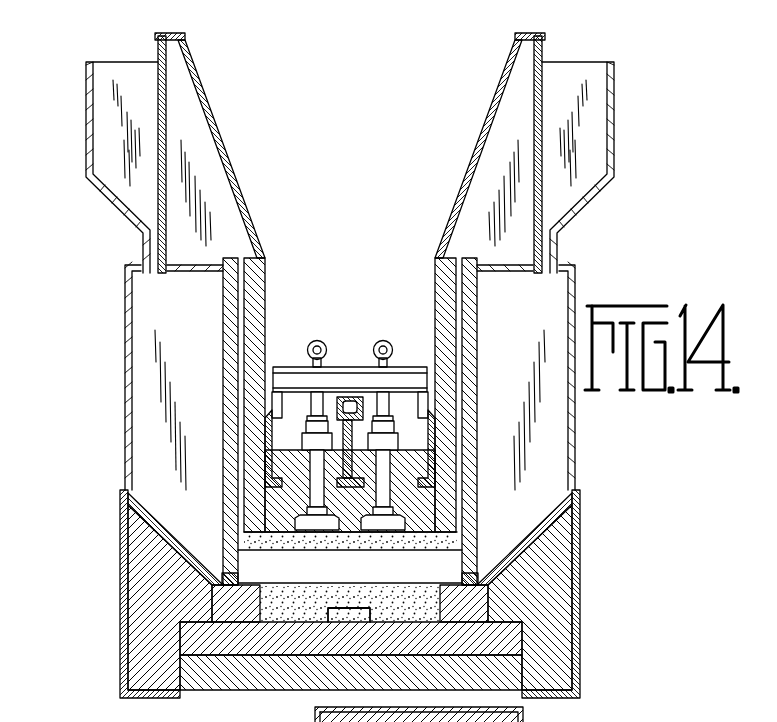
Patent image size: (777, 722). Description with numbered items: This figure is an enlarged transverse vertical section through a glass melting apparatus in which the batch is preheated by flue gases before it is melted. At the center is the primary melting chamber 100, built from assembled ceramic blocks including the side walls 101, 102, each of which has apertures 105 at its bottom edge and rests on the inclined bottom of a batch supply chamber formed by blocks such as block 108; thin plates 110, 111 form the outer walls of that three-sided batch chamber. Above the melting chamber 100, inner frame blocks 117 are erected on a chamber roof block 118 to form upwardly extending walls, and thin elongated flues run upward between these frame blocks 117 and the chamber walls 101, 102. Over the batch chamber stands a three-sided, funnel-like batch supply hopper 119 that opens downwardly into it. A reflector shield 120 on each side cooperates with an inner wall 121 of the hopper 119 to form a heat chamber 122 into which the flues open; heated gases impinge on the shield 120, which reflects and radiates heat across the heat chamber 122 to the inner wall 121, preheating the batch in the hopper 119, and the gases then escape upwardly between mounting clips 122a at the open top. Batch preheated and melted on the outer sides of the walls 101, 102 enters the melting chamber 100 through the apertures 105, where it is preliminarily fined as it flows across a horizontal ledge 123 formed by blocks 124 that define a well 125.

The melting chamber 100 is at (392, 577).
The side wall 101 is at (478, 497).
The side wall 102 is at (223, 498).
The apertures 105 is at (224, 578).
The block 108 is at (150, 503).
The thin plate 110 is at (576, 443).
The thin plate 111 is at (125, 426).
The inner frame block 117 is at (265, 302).
The chamber roof block 118 is at (412, 452).
The batch supply hopper 119 is at (117, 146).
The reflector shield 120 is at (237, 170).
The inner wall 121 is at (166, 107).
The heat chamber 122 is at (218, 227).
The mounting clips 122a is at (181, 38).
The horizontal ledge 123 is at (255, 583).
The blocks 124 is at (263, 601).
The well 125 is at (309, 616).